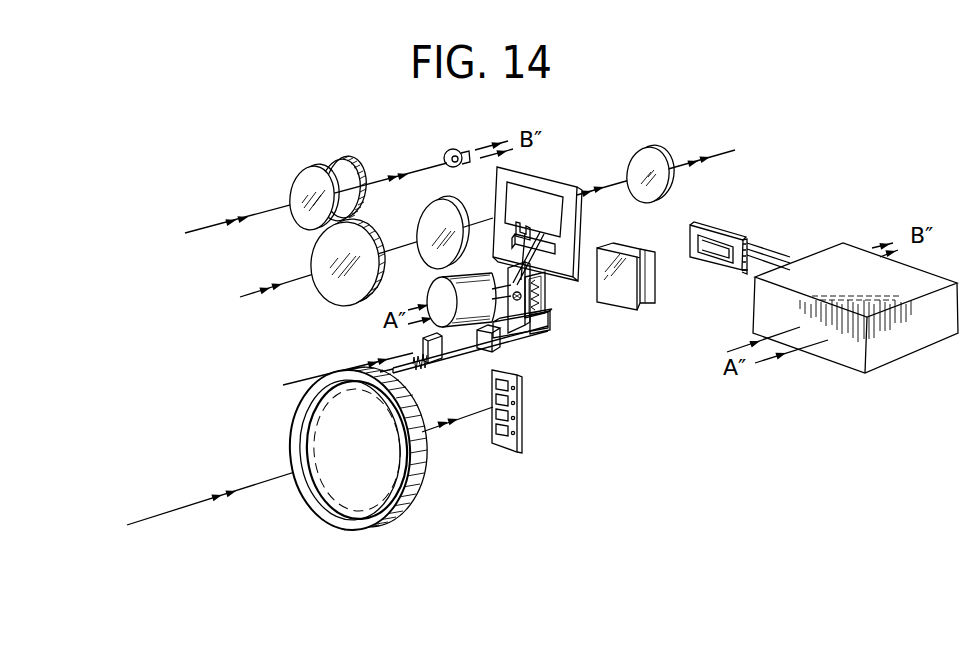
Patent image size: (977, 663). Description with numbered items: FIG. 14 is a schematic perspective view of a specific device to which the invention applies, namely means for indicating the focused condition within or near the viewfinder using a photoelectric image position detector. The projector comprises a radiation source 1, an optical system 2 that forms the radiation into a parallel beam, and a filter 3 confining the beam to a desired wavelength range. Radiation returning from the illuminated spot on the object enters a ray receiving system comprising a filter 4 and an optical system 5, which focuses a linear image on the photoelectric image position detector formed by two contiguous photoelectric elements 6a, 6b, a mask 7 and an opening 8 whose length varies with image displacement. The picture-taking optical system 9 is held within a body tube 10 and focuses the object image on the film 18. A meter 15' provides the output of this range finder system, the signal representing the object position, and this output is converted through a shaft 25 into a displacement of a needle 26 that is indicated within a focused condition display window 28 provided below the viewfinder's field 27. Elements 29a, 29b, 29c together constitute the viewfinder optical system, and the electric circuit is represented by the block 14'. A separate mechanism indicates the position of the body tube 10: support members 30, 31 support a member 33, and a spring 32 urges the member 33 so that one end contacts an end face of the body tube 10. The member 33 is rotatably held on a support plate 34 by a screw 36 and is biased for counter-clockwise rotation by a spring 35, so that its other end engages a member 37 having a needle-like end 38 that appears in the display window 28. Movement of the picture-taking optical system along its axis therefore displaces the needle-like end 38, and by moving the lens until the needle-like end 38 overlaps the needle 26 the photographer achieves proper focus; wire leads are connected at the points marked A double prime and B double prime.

The radiation source 1 is at (454, 148).
The optical system 2 is at (352, 170).
The filter 3 is at (296, 192).
The filter 4 is at (616, 303).
The optical system 5 is at (655, 284).
The photoelectric element 6a is at (748, 243).
The photoelectric element 6b is at (745, 268).
The mask 7 is at (718, 226).
The opening 8 is at (722, 246).
The picture-taking optical system 9 is at (374, 500).
The body tube 10 is at (424, 460).
The detector housing 14' is at (855, 308).
The meter 15' is at (448, 297).
The film 18 is at (522, 410).
The shaft 25 is at (509, 280).
The needle 26 is at (538, 242).
The viewfinder's field 27 is at (554, 209).
The focused condition display window 28 is at (556, 247).
The viewfinder optical system element 29a is at (337, 290).
The viewfinder optical system element 29b is at (432, 218).
The viewfinder optical system element 29c is at (650, 160).
The support member 30 is at (423, 342).
The support member 31 is at (496, 340).
The spring 32 is at (434, 363).
The member 33 is at (395, 370).
The support plate 34 is at (548, 296).
The spring 35 is at (552, 318).
The screw 36 is at (512, 297).
The member 37 is at (543, 336).
The needle-like end 38 is at (516, 228).